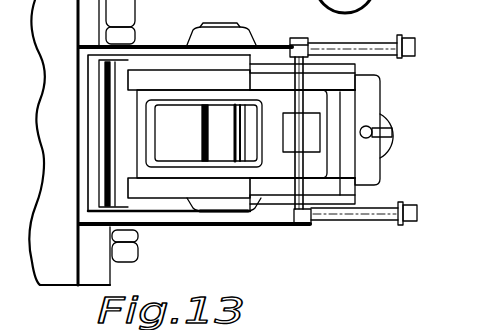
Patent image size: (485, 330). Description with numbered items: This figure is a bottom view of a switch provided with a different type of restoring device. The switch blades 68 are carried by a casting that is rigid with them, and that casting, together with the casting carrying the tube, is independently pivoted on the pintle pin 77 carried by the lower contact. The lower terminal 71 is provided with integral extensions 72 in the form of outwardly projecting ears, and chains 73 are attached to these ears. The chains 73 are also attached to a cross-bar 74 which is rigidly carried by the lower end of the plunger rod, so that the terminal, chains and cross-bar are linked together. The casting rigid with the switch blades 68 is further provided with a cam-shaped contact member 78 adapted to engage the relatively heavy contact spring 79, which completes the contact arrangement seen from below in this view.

The switch blades 68 is at (266, 67).
The lower terminal 71 is at (86, 173).
The integral extensions 72 is at (405, 58).
The chains 73 is at (366, 43).
The cross-bar 74 is at (295, 204).
The pintle pin 77 is at (217, 130).
The cam-shaped contact member 78 is at (155, 73).
The contact spring 79 is at (115, 108).